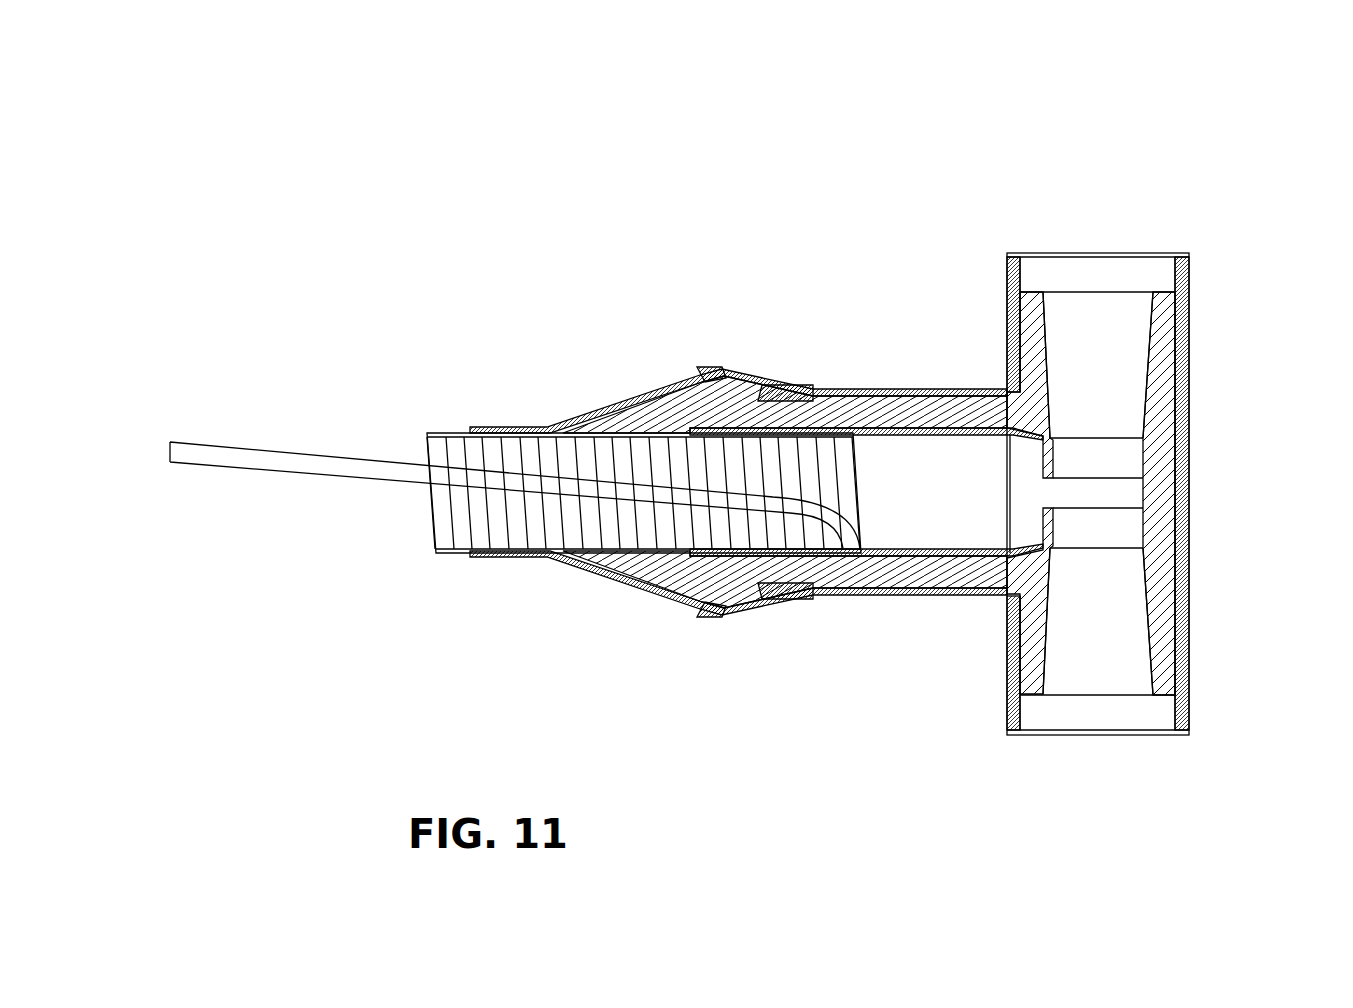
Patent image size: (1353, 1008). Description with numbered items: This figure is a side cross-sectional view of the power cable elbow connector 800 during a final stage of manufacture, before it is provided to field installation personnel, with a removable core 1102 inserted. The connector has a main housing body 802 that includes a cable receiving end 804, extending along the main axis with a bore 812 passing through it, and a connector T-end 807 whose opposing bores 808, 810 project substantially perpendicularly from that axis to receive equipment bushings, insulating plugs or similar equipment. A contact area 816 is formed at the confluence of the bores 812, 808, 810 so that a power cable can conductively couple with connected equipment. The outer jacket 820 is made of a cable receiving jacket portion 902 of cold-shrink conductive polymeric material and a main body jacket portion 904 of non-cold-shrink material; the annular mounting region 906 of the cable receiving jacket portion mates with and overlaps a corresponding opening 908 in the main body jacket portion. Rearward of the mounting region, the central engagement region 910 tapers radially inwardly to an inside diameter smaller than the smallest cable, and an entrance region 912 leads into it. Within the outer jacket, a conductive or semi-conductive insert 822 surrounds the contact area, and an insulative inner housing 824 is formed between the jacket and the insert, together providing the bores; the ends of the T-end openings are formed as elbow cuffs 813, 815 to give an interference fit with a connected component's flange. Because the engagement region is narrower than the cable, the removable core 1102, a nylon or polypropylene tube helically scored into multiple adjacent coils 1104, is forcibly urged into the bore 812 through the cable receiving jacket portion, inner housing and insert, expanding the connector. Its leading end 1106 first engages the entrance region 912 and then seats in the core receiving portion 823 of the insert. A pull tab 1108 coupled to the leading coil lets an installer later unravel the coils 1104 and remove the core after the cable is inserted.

The power cable elbow connector 800 is at (849, 212).
The main housing body 802 is at (683, 350).
The cable receiving end 804 is at (683, 632).
The connector T-end 807 is at (1215, 467).
The bore 808 is at (1104, 358).
The bore 810 is at (1097, 631).
The bore 812 is at (912, 503).
The elbow cuff 813 is at (1140, 278).
The elbow cuff 815 is at (1060, 705).
The contact area 816 is at (1132, 514).
The outer jacket 820 is at (825, 654).
The conductive or semi-conductive insert 822 is at (880, 428).
The core receiving portion 823 is at (722, 432).
The insulative inner housing 824 is at (1025, 632).
The cable receiving jacket portion 902 is at (615, 583).
The main body jacket portion 904 is at (1010, 362).
The annular mounting region 906 is at (750, 610).
The opening 908 is at (785, 600).
The central engagement region 910 is at (535, 562).
The entrance region 912 is at (470, 428).
The removable core 1102 is at (440, 510).
The coils 1104 is at (517, 527).
The leading end 1106 is at (858, 478).
The pull tab 1108 is at (305, 468).